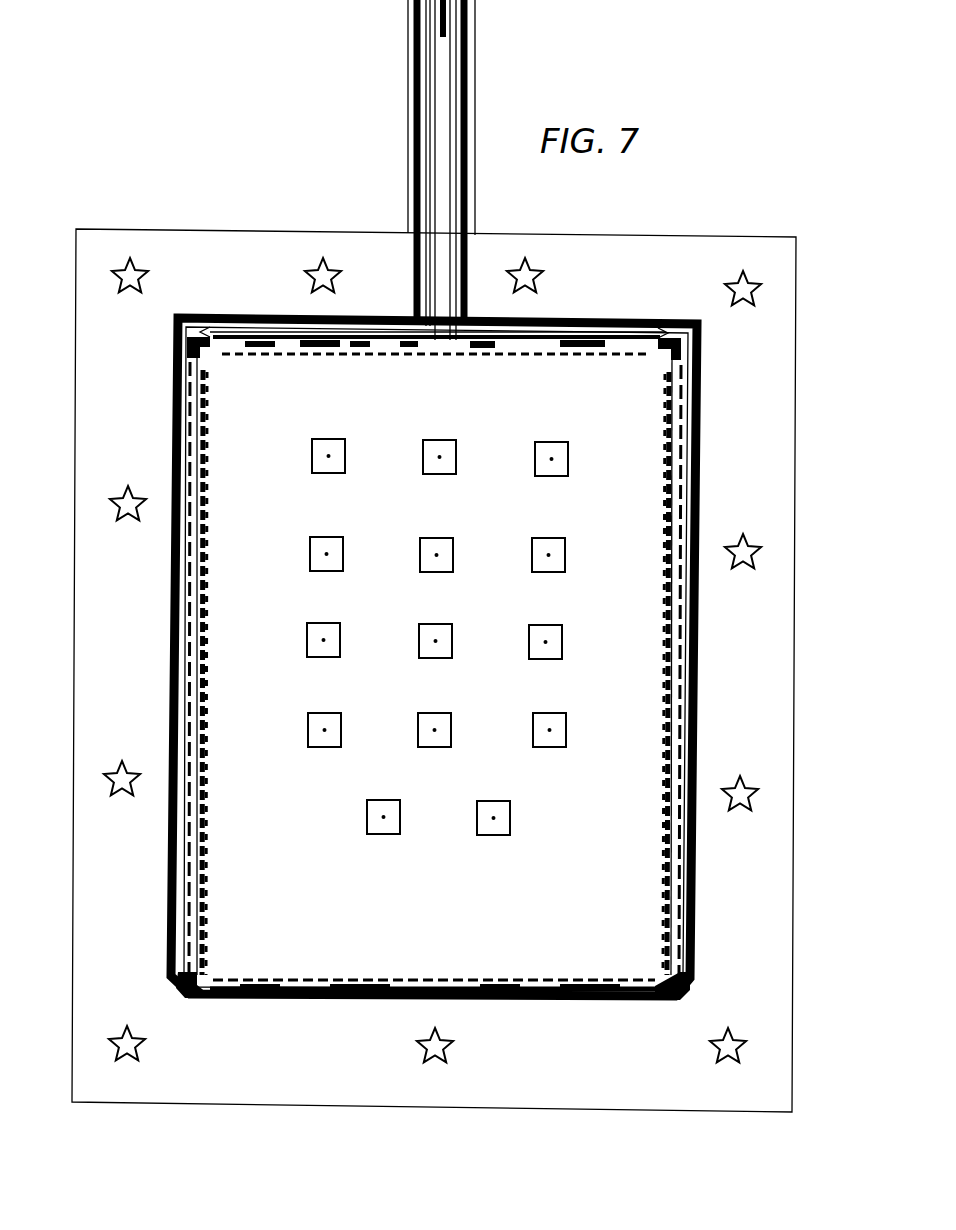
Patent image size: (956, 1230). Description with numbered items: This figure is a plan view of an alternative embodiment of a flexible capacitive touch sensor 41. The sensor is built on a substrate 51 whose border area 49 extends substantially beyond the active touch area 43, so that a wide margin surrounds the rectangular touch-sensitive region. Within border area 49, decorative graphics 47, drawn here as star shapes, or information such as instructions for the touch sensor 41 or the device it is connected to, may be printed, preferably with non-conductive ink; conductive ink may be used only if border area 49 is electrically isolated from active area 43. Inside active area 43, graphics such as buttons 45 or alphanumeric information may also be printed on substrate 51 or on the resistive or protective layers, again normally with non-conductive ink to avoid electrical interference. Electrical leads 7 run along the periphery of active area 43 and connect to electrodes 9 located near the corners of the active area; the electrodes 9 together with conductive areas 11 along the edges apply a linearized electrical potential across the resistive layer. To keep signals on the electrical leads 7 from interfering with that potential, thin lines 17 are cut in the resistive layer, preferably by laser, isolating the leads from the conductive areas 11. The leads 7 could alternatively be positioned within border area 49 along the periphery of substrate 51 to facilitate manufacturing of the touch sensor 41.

The flexible capacitive touch sensor 41 is at (262, 160).
The substrate 51 is at (683, 237).
The border area 49 is at (745, 432).
The decorative graphics 47 is at (148, 275).
The electrical leads 7 is at (700, 623).
The lines 17 is at (180, 663).
The conductive areas 11 is at (205, 530).
The electrodes 9 is at (205, 352).
The buttons 45 is at (457, 447).
The active touch area 43 is at (440, 924).